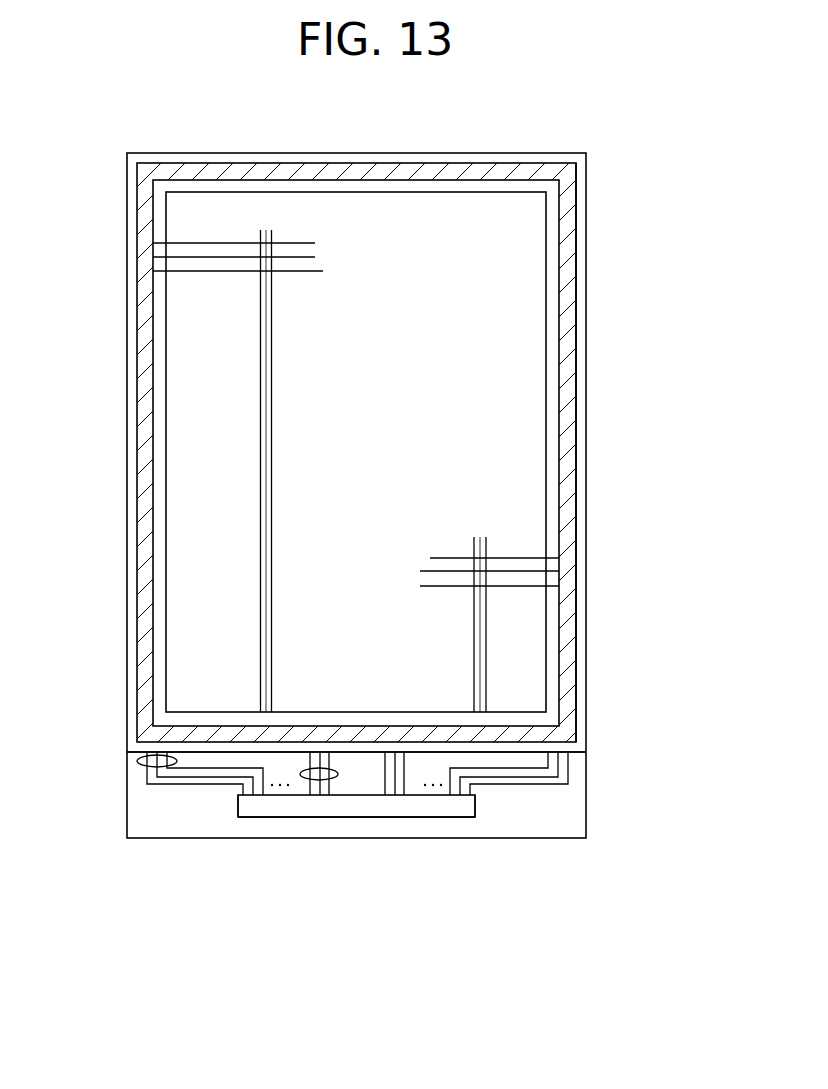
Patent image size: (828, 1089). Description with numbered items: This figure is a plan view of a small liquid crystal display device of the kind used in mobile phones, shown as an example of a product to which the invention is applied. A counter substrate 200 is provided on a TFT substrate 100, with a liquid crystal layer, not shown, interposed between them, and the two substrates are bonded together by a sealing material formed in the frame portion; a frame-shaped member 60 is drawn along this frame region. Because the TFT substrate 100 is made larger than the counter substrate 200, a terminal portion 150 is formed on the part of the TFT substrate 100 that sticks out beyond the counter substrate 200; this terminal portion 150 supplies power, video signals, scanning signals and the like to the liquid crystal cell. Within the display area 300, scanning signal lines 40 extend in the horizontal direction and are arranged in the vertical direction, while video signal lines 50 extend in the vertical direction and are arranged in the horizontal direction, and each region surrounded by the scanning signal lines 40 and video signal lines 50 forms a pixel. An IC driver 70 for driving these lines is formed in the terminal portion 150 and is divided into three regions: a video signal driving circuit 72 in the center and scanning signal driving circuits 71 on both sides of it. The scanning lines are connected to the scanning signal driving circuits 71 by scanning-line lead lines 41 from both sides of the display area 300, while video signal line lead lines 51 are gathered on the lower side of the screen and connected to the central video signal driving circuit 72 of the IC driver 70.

The scanning signal line 40 is at (260, 543).
The scanning-line lead line 41 is at (140, 760).
The video signal line 50 is at (203, 273).
The video signal line lead line 51 is at (343, 797).
The sealing member 60 is at (576, 570).
The IC driver 70 is at (403, 818).
The scanning signal driving circuit 71 is at (262, 807).
The video signal driving circuit 72 is at (362, 807).
The TFT substrate 100 is at (587, 822).
The terminal portion 150 is at (558, 799).
The counter substrate 200 is at (587, 400).
The display area 300 is at (548, 303).